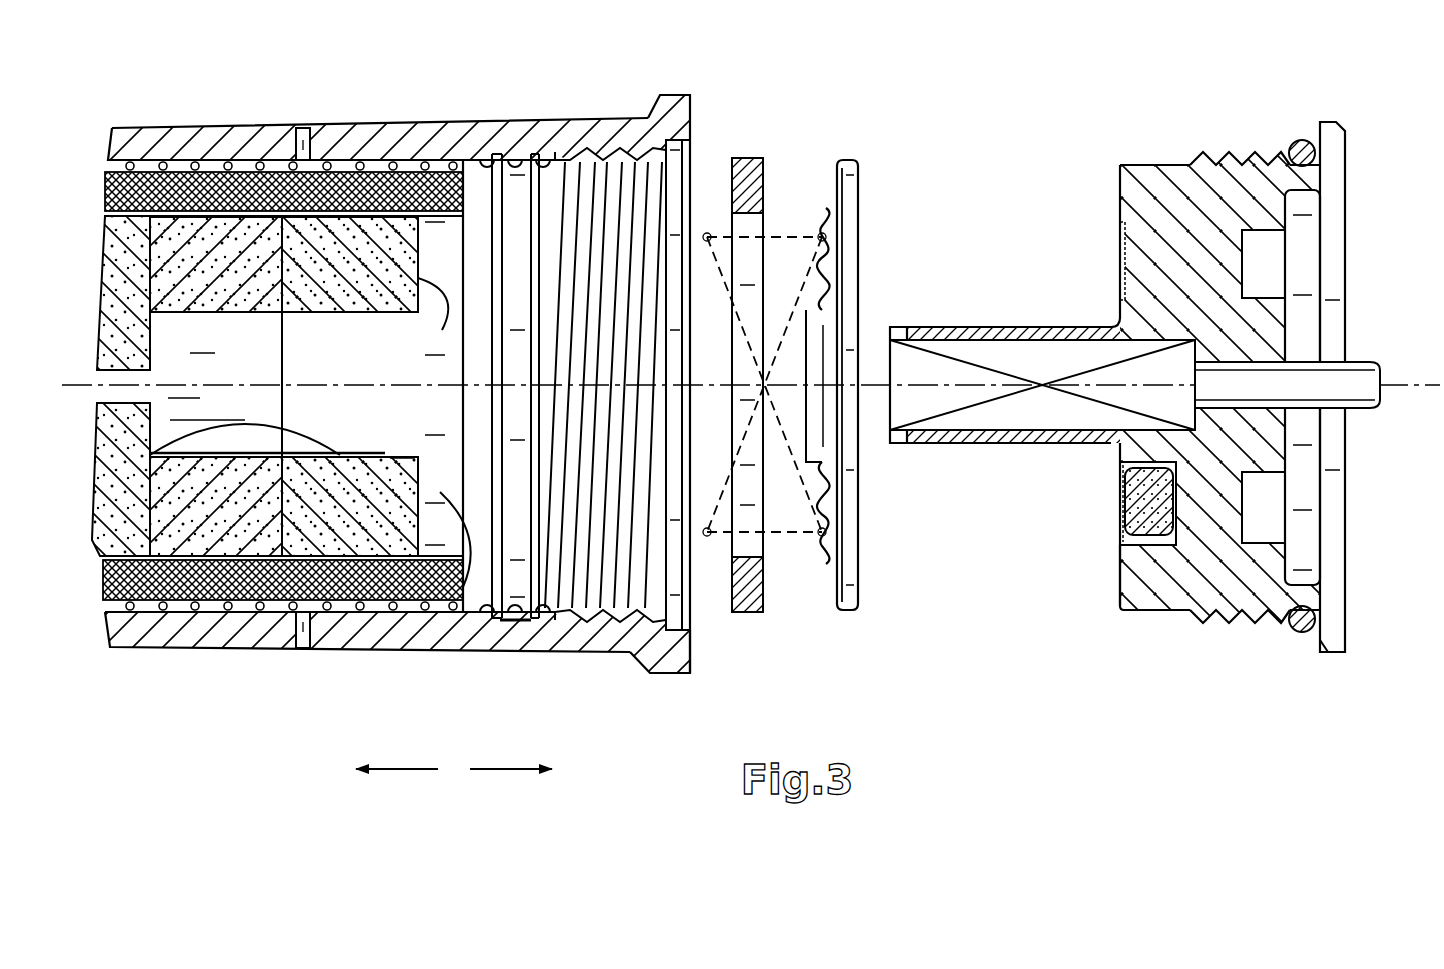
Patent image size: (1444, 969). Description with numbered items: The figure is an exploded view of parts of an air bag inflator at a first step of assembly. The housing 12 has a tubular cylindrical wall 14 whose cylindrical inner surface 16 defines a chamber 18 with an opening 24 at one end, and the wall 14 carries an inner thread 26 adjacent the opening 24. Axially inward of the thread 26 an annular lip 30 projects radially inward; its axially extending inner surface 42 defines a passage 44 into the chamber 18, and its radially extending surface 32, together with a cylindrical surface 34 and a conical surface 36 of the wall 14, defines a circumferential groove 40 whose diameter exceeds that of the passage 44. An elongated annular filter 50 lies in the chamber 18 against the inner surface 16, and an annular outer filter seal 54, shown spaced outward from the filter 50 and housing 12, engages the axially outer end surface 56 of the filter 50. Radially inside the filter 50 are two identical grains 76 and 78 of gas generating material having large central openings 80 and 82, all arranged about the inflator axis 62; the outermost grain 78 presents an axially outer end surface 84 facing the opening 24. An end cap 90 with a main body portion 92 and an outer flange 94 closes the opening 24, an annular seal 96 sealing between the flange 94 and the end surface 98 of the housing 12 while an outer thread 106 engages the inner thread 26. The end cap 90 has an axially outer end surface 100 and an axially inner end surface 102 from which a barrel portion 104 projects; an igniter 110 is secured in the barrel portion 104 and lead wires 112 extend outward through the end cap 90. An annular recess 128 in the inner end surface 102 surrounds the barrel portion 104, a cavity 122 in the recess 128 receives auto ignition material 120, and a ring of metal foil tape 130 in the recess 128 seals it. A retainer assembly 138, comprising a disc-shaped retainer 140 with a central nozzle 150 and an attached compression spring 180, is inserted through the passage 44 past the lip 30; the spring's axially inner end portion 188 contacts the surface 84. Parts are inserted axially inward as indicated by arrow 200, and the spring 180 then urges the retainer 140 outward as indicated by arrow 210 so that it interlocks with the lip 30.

The housing 12 is at (398, 116).
The tubular cylindrical wall 14 is at (270, 128).
The cylindrical inner surface 16 is at (462, 158).
The chamber 18 is at (150, 166).
The opening 24 is at (694, 140).
The inner thread 26 is at (598, 150).
The annular lip 30 is at (535, 618).
The radially extending axially inward facing surface 32 is at (540, 152).
The cylindrical surface 34 is at (516, 152).
The conical surface 36 is at (487, 155).
The circumferential groove 40 is at (517, 603).
The axially extending inner surface 42 is at (567, 150).
The passage 44 is at (538, 581).
The annular filter 50 is at (105, 188).
The outer filter seal 54 is at (765, 158).
The axially outer end surface 56 is at (447, 526).
The inflator axis 62 is at (86, 388).
The grain 76 is at (208, 272).
The grain 78 is at (360, 513).
The central opening 80 is at (190, 352).
The central opening 82 is at (246, 409).
The axially outer end surface 84 is at (437, 320).
The end cap 90 is at (1134, 162).
The main body portion 92 is at (1255, 592).
The outer flange 94 is at (1347, 130).
The annular seal 96 is at (1306, 141).
The end surface 98 is at (691, 655).
The axially outer end surface 100 is at (1346, 632).
The axially inner end surface 102 is at (1116, 579).
The barrel portion 104 is at (986, 326).
The outer thread 106 is at (1233, 152).
The igniter 110 is at (955, 447).
The lead wires 112 is at (1372, 406).
The auto ignition material 120 is at (1148, 532).
The cavity 122 is at (1186, 596).
The annular recess 128 is at (1120, 226).
The metal foil tape 130 is at (1116, 506).
The retainer assembly 138 is at (853, 156).
The retainer 140 is at (864, 218).
The nozzle 150 is at (836, 320).
The compression spring 180 is at (786, 545).
The axially inner end portion 188 is at (707, 538).
The arrow 200 is at (397, 754).
The arrow 210 is at (511, 754).